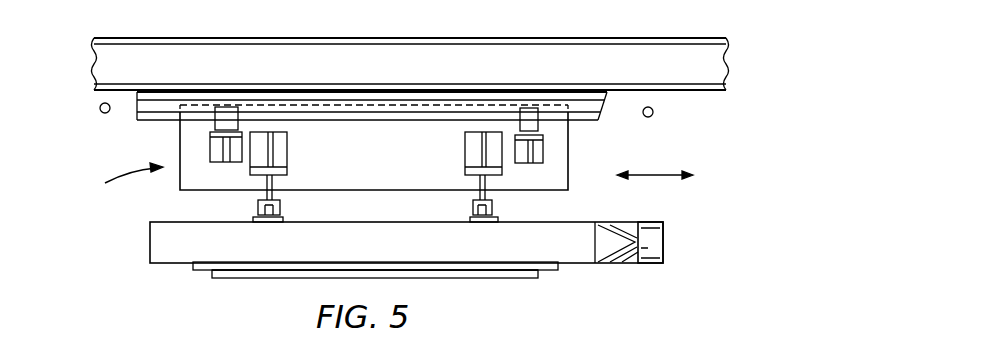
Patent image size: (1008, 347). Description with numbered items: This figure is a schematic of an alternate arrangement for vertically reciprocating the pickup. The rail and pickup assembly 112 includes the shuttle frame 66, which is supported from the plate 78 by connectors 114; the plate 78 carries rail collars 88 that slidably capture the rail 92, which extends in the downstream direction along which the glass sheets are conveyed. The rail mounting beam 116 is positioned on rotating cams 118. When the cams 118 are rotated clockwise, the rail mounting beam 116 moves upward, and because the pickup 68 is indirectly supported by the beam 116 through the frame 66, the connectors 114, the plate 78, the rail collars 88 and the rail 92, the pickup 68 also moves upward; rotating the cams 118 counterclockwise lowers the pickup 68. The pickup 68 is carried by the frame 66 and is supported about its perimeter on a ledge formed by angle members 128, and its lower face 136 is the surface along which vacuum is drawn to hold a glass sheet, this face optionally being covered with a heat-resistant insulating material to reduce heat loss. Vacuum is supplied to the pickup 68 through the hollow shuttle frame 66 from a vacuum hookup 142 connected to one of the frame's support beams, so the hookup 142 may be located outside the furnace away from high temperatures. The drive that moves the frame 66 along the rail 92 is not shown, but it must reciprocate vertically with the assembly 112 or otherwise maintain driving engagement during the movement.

The rail mounting beam 116 is at (658, 40).
The rotating cams 118 is at (100, 107).
The rail member 92 is at (143, 121).
The plate support 78 is at (568, 144).
The rail collars 88 is at (222, 107).
The connectors 114 is at (275, 183).
The rail and pickup assembly 112 is at (380, 179).
The shuttle frame 66 is at (150, 244).
The vacuum platen pickup 68 is at (542, 275).
The lower face 136 is at (475, 278).
The angle members 128 is at (270, 271).
The vacuum hookup 142 is at (652, 268).